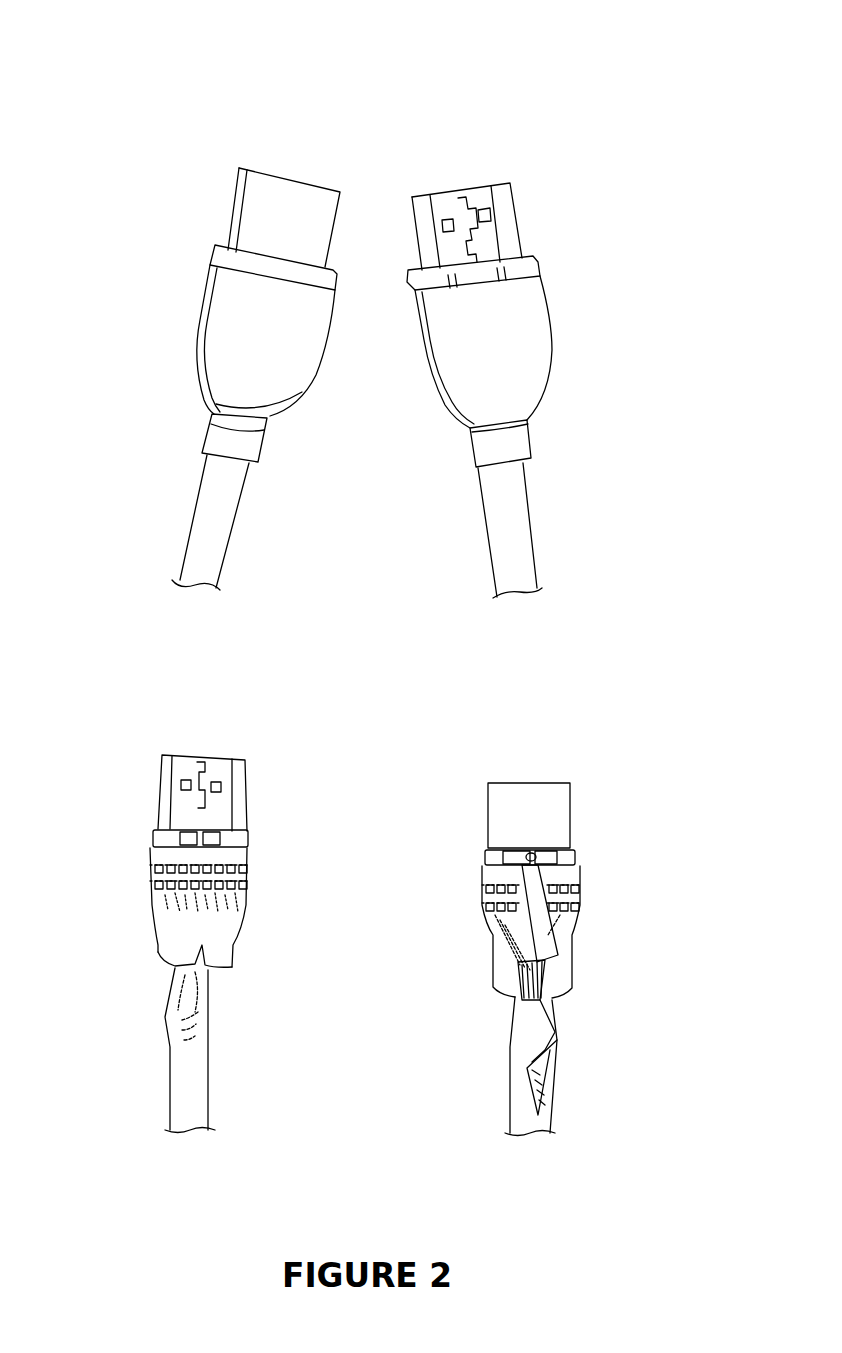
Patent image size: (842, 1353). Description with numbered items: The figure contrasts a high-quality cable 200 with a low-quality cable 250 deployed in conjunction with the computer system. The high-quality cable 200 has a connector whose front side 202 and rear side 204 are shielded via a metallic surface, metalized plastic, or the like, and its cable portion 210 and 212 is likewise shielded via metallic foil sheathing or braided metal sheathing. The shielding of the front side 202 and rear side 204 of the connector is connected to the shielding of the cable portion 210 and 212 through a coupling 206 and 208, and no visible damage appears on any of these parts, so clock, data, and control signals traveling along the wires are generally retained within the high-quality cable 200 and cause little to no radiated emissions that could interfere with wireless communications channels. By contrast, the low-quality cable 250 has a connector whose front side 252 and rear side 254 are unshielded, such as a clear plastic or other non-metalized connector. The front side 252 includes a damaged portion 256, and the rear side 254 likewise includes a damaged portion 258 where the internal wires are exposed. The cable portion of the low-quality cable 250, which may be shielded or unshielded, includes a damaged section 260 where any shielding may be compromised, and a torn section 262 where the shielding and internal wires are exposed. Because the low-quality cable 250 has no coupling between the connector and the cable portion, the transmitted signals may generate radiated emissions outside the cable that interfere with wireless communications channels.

The high-quality cable 200 is at (387, 58).
The front side of the connector 202 is at (212, 303).
The rear side of the connector 204 is at (548, 314).
The coupling 206 is at (205, 436).
The coupling 208 is at (530, 432).
The cable portion 210 is at (198, 508).
The cable portion 212 is at (530, 520).
The low-quality cable 250 is at (387, 742).
The front side of the connector 252 is at (150, 882).
The rear side of the connector 254 is at (485, 930).
The damaged portion 256 is at (182, 960).
The damaged portion 258 is at (520, 976).
The damaged section 260 is at (166, 1020).
The torn section 262 is at (555, 1048).